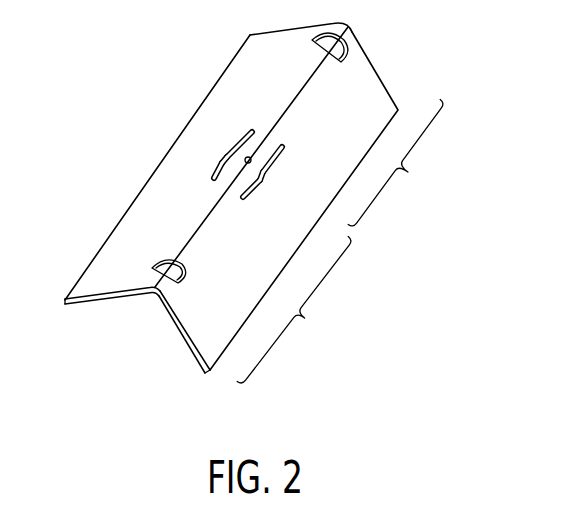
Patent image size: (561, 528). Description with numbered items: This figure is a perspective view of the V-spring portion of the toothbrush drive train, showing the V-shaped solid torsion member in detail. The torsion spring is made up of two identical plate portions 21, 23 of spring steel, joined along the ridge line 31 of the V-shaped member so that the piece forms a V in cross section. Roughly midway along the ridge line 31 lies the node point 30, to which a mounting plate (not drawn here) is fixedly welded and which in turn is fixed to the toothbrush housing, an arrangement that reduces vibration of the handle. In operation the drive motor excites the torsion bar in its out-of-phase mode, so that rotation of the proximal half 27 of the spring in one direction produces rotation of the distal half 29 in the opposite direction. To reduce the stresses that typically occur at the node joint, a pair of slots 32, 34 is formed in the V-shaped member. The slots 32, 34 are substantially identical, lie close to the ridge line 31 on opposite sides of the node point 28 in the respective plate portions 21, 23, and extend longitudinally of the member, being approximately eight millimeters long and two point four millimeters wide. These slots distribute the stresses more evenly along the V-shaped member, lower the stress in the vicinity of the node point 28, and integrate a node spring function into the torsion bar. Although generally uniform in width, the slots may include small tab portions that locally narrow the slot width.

The plate portion 21 is at (130, 229).
The plate portion 23 is at (203, 323).
The proximal half 27 is at (294, 309).
The node point 28 is at (226, 152).
The distal half 29 is at (395, 162).
The node point 30 is at (250, 156).
The ridge line 31 is at (310, 84).
The slot 32 is at (220, 170).
The slot 34 is at (258, 182).